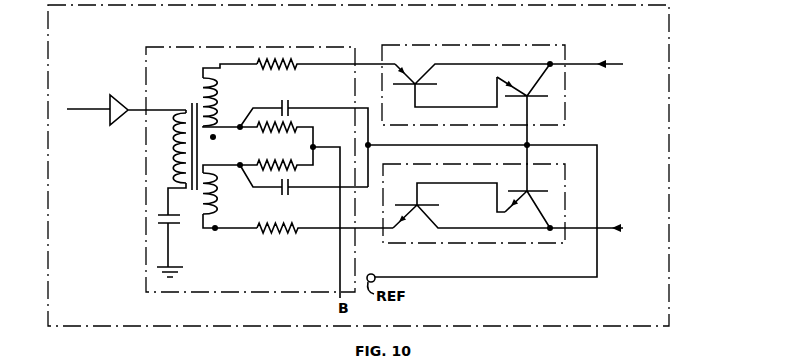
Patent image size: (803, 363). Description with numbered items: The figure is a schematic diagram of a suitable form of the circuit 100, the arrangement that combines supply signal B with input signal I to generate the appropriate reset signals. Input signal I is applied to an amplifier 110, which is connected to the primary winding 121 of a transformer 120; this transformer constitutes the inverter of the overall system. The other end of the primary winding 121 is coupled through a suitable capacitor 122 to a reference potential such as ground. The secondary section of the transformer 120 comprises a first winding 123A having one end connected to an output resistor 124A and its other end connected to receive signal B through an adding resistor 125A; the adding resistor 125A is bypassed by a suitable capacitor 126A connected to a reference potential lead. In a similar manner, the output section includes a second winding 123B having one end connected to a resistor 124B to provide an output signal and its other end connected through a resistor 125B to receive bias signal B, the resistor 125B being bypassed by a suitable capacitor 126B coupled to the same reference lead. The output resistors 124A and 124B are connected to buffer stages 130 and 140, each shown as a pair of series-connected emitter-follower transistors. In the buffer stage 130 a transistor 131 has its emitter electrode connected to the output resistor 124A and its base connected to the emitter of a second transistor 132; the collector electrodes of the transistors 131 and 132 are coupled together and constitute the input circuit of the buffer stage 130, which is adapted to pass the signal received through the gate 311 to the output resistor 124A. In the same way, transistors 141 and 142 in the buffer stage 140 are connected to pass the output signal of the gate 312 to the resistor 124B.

The circuit 100 is at (669, 142).
The amplifier 110 is at (120, 95).
The transformer 120 is at (197, 47).
The primary winding 121 is at (184, 108).
The capacitor 122 is at (184, 246).
The first winding 123A is at (216, 94).
The second winding 123B is at (217, 199).
The output resistor 124A is at (290, 60).
The resistor 124B is at (263, 235).
The adding resistor 125A is at (291, 124).
The resistor 125B is at (293, 167).
The capacitor 126A is at (288, 103).
The capacitor 126B is at (292, 191).
The buffer stage 130 is at (468, 45).
The transistor 131 is at (410, 74).
The second transistor 132 is at (527, 93).
The buffer stage 140 is at (440, 243).
The transistor 141 is at (416, 209).
The transistor 142 is at (526, 203).
The gate 311 is at (596, 62).
The gate 312 is at (598, 235).